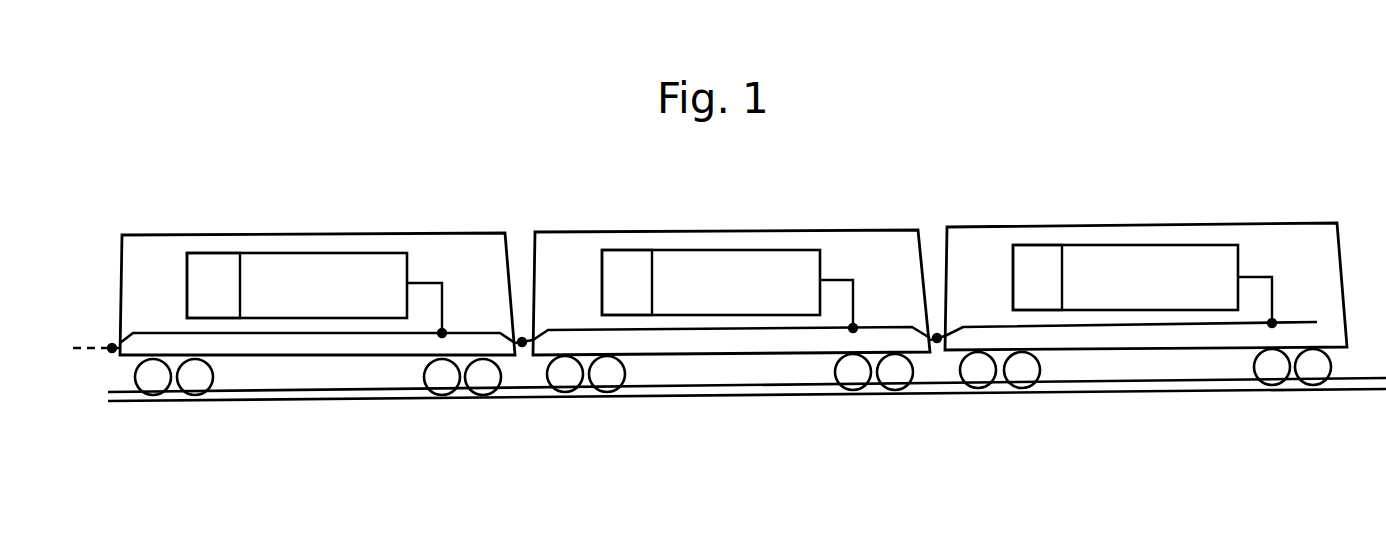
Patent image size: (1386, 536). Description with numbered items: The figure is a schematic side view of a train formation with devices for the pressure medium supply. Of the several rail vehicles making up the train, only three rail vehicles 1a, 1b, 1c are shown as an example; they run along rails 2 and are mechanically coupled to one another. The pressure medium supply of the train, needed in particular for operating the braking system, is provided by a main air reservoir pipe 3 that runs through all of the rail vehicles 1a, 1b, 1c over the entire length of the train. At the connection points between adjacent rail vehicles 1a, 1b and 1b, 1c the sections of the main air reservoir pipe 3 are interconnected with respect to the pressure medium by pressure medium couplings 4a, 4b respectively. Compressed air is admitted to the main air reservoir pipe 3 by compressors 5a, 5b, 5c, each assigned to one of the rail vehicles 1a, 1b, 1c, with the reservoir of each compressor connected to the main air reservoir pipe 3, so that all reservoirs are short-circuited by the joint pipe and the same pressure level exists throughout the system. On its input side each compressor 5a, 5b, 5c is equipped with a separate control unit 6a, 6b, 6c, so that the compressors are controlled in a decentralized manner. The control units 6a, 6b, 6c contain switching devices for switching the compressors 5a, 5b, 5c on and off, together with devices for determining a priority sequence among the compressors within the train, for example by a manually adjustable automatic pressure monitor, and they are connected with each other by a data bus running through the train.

The rail vehicle 1a is at (285, 233).
The rail vehicle 1b is at (708, 230).
The rail vehicle 1c is at (1117, 177).
The rails 2 is at (288, 397).
The main air reservoir pipe 3 is at (715, 332).
The pressure medium coupling 4a is at (522, 342).
The pressure medium coupling 4b is at (937, 338).
The compressor 5a is at (345, 277).
The compressor 5b is at (770, 267).
The compressor 5c is at (1178, 263).
The control unit 6a is at (215, 267).
The control unit 6b is at (627, 267).
The control unit 6c is at (1035, 260).